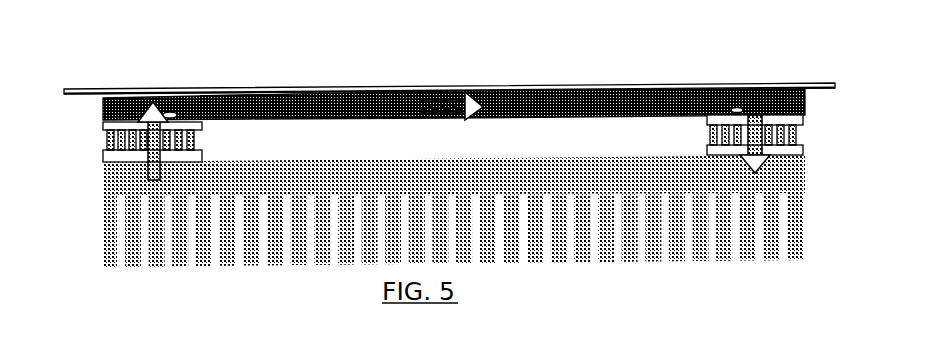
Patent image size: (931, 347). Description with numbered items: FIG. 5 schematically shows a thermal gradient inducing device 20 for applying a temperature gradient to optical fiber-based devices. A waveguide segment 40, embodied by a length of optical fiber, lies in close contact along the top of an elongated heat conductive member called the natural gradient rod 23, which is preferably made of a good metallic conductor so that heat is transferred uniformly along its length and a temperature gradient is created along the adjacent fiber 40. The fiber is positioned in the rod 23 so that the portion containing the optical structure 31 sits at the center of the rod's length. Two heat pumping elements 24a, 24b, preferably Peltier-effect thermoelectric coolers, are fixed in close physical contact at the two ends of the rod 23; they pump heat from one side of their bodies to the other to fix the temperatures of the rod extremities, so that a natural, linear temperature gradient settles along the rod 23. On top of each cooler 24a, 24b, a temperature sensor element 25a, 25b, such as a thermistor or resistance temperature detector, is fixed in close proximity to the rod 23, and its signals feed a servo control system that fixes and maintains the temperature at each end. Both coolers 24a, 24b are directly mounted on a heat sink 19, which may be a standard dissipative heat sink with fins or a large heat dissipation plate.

The thermal control assembly 20 is at (432, 139).
The heat sink 19 is at (112, 226).
The waveguide segment 40 is at (66, 92).
The optical structure 31 is at (397, 88).
The natural gradient rod 23 is at (358, 114).
The heat pumping element 24a is at (200, 154).
The heat pumping element 24b is at (707, 150).
The temperature sensor element 25a is at (183, 97).
The temperature sensor element 25b is at (726, 91).